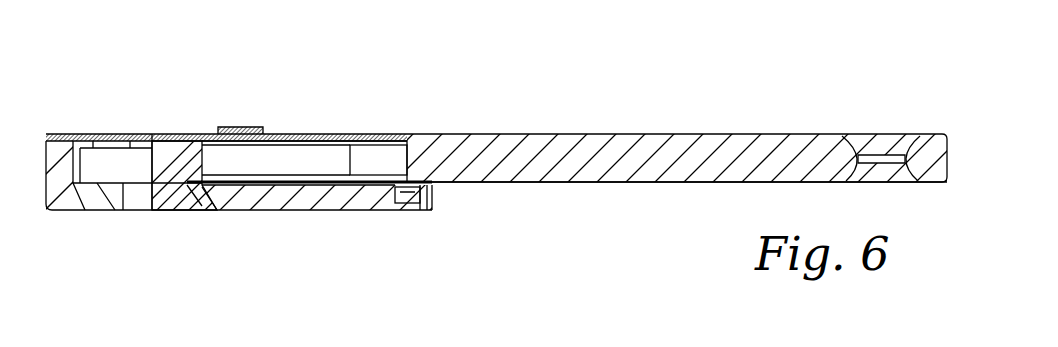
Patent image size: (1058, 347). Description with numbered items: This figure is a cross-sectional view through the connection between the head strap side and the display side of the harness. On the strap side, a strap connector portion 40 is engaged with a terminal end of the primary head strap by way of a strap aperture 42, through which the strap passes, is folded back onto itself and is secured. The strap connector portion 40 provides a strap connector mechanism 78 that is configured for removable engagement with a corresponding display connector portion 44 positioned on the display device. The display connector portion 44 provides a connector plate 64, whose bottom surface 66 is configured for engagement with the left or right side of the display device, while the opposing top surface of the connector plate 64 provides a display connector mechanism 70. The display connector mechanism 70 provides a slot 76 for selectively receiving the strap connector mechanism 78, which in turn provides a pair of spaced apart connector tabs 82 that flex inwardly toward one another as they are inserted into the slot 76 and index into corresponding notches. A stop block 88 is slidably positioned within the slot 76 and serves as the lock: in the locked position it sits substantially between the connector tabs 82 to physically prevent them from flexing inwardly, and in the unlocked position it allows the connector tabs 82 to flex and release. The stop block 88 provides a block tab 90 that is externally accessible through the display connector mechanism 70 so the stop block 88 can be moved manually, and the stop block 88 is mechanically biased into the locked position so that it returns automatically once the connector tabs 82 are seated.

The strap connector portion 40 is at (700, 115).
The strap aperture 42 is at (880, 138).
The display connector portion 44 is at (233, 236).
The connector plate 64 is at (312, 120).
The bottom surface 66 is at (182, 135).
The display connector mechanism 70 is at (68, 210).
The slot 76 is at (412, 194).
The strap connector mechanism 78 is at (641, 183).
The connector tab 82 is at (363, 163).
The stop block 88 is at (168, 165).
The block tab 90 is at (150, 211).